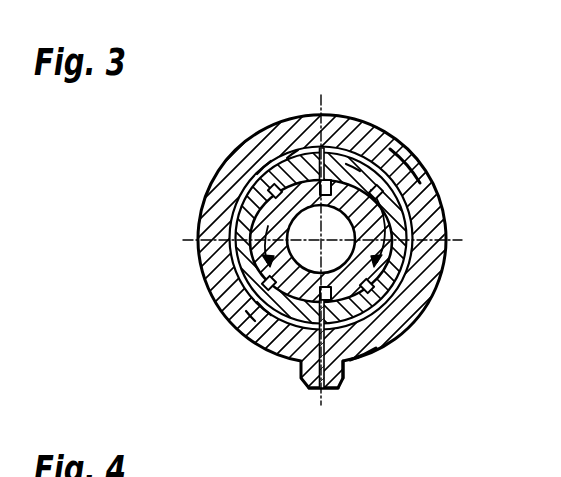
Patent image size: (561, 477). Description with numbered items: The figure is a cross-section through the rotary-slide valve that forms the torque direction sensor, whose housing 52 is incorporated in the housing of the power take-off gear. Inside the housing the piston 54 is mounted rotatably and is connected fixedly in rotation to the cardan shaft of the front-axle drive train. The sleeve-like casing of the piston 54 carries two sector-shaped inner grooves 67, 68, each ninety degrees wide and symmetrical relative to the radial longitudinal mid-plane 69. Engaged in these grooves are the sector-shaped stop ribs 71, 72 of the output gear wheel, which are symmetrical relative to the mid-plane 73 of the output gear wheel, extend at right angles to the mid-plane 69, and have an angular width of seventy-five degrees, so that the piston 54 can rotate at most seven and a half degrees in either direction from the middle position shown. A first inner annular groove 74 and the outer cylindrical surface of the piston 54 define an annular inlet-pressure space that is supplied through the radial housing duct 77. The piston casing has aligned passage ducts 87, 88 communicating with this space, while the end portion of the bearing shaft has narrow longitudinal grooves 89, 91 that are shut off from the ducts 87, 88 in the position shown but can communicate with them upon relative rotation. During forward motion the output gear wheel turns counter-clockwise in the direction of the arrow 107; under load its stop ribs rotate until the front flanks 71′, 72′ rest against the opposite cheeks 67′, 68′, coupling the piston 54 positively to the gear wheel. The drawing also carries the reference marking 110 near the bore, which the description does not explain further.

The housing 52 is at (306, 115).
The piston 54 is at (292, 151).
The inner groove 67 is at (247, 167).
The cheek of groove 67′ is at (265, 333).
The inner groove 68 is at (408, 328).
The cheek of groove 68′ is at (403, 158).
The radial longitudinal mid-plane 69 is at (321, 116).
The stop rib 71 is at (253, 236).
The front flank 71′ is at (265, 285).
The stop rib 72 is at (408, 228).
The front flank 72′ is at (385, 195).
The mid-plane of the output gear wheel 73 is at (183, 245).
The first inner annular groove 74 is at (247, 318).
The radial housing duct 77 is at (331, 389).
The passage duct 87 is at (331, 180).
The passage duct 88 is at (314, 302).
The longitudinal groove 89 is at (352, 160).
The longitudinal groove 91 is at (357, 360).
The arrow 107 is at (299, 227).
The shaft center 110 is at (385, 242).